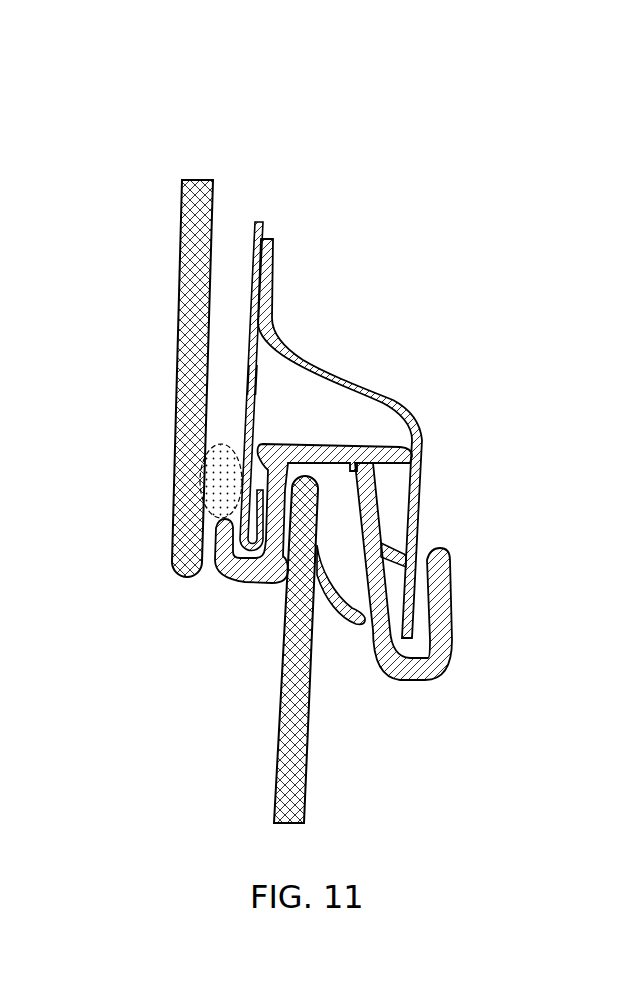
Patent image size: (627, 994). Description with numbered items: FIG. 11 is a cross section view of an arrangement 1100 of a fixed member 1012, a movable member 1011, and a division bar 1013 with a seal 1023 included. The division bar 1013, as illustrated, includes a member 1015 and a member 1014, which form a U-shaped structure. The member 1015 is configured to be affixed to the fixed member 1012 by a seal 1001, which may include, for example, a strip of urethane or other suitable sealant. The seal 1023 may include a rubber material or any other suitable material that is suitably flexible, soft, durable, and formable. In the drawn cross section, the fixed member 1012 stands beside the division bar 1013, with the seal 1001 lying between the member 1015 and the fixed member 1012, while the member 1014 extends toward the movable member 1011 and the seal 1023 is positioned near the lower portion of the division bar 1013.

The assembly 1100 is at (381, 58).
The fixed member 1012 is at (181, 284).
The division bar 1013 is at (270, 217).
The member 1015 is at (248, 376).
The member 1014 is at (423, 478).
The seal 1023 is at (443, 670).
The movable member 1011 is at (277, 767).
The seal 1001 is at (220, 481).